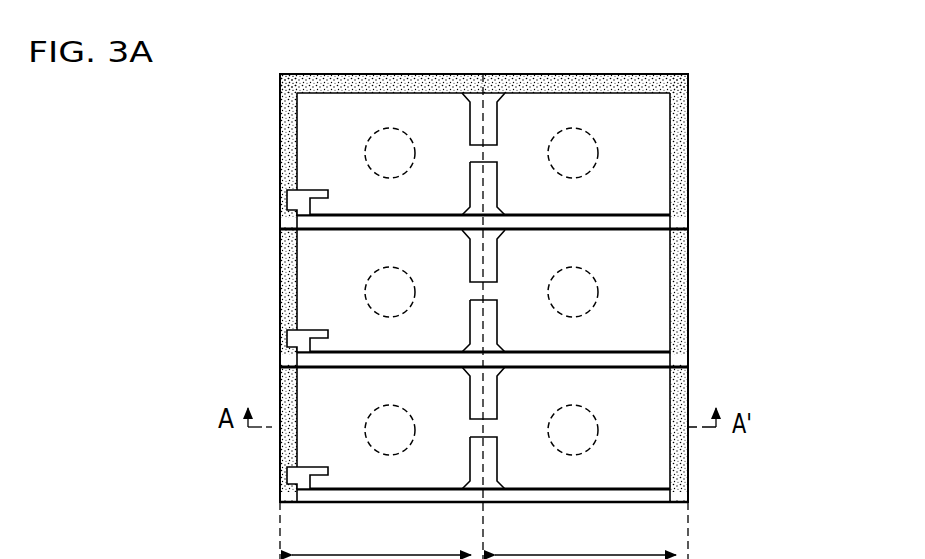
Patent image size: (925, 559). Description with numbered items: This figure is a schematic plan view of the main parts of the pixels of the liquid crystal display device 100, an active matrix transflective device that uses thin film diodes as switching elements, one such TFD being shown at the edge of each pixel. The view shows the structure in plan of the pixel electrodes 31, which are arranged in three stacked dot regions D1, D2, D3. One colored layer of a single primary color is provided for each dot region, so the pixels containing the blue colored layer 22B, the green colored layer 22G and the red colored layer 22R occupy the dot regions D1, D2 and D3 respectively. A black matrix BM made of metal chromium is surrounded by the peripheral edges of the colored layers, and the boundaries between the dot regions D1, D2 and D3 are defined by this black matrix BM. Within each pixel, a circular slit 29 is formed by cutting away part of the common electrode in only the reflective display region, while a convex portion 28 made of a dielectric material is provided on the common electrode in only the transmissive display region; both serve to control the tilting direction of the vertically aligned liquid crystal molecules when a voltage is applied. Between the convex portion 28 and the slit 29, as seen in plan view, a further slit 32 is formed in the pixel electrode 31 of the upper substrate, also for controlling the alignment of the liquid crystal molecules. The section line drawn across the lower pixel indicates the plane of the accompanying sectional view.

The liquid crystal display device 100 is at (705, 84).
The blue colored layer 22B is at (655, 103).
The green colored layer 22G is at (660, 245).
The red colored layer 22R is at (655, 380).
The convex portion 28 is at (573, 128).
The slit 29 is at (390, 128).
The pixel electrode 31 is at (655, 163).
The slit 32 is at (492, 92).
The black matrix BM is at (280, 230).
The thin film diode TFD is at (290, 188).
The dot region D1 is at (318, 124).
The dot region D2 is at (308, 287).
The dot region D3 is at (318, 395).